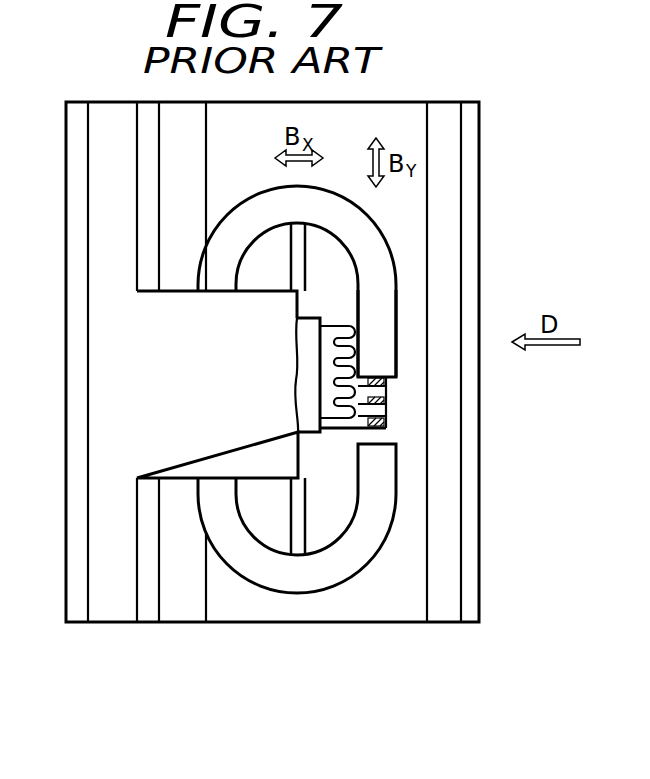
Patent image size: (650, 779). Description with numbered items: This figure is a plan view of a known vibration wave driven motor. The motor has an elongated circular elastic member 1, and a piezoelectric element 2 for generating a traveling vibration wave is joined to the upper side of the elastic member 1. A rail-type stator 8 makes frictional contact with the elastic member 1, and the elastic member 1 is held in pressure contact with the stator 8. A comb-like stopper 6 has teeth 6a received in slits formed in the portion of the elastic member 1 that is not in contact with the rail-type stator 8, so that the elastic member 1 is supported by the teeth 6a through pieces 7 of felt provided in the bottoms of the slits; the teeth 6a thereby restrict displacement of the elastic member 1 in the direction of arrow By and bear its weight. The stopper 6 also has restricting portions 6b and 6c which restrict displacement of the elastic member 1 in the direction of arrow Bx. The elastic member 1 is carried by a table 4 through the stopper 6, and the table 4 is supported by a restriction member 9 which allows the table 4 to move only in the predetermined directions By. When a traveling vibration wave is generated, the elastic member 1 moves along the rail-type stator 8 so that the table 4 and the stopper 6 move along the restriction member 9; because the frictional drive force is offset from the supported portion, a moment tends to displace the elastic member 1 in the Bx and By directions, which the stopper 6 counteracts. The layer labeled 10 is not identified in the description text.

The elastic member 1 is at (396, 287).
The piezoelectric element 2 is at (380, 322).
The table 4 is at (147, 384).
The stopper 6 is at (330, 413).
The teeth 6a is at (372, 410).
The restricting portion 6b is at (305, 528).
The restricting portion 6c is at (295, 262).
The pieces of felt 7 is at (384, 396).
The rail-type stator 8 is at (184, 604).
The restriction member 9 is at (100, 551).
The substrate 10 is at (470, 568).